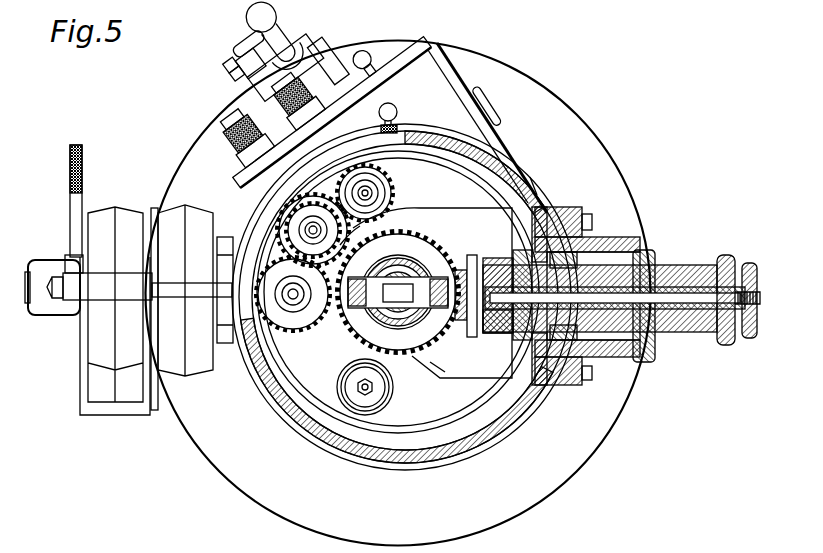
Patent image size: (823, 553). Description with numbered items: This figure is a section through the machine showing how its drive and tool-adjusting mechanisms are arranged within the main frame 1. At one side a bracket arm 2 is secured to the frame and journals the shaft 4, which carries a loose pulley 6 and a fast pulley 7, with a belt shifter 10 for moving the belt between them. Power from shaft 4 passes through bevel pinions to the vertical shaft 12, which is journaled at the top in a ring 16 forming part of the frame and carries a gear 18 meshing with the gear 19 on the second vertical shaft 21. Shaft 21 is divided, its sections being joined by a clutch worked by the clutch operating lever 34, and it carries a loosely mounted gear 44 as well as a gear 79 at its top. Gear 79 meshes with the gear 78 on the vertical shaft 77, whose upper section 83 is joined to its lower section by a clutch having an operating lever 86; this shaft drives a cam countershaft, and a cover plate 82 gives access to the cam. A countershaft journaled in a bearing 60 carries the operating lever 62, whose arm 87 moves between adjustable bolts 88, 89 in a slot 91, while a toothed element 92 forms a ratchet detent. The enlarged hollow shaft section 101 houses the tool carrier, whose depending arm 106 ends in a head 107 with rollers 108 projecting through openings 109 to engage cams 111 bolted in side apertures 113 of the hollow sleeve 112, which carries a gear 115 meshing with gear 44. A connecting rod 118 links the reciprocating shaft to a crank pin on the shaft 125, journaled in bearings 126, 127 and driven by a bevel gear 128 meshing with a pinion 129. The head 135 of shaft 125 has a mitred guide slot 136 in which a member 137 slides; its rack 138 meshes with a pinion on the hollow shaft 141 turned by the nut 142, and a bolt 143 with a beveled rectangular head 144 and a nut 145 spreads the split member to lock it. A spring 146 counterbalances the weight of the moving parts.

The main frame 1 is at (297, 536).
The bracket arm 2 is at (54, 300).
The shaft 4 is at (27, 300).
The loose pulley 6 is at (115, 212).
The fast pulley 7 is at (180, 206).
The belt shifter 10 is at (147, 286).
The vertical shaft 12 is at (293, 300).
The ring 16 is at (462, 293).
The gear 18 is at (306, 334).
The gear 19 is at (256, 224).
The second vertical shaft 21 is at (311, 220).
The clutch operating lever 34 is at (230, 136).
The gear 44 is at (266, 216).
The bearing 60 is at (360, 52).
The operating lever 62 is at (272, 12).
The vertical shaft 77 is at (378, 193).
The gear 78 is at (388, 186).
The gear 79 is at (258, 196).
The cover plate 82 is at (415, 42).
The upper section 83 is at (365, 190).
The operating lever 86 is at (286, 104).
The arm 87 is at (252, 99).
The bolt 88 is at (252, 90).
The bolt 89 is at (262, 79).
The slot 91 is at (256, 48).
The toothed element 92 is at (326, 54).
The hollow shaft section 101 is at (393, 234).
The depending arm 106 is at (411, 262).
The head 107 is at (404, 326).
The rollers 108 is at (447, 263).
The openings 109 is at (418, 243).
The cams 111 is at (440, 334).
The hollow sleeve 112 is at (427, 352).
The side apertures 113 is at (381, 275).
The gear 115 is at (452, 243).
The connecting rod 118 is at (450, 352).
The shaft 125 is at (646, 244).
The bearing 126 is at (578, 270).
The bearing 127 is at (669, 265).
The bevel gear 128 is at (590, 230).
The pinion 129 is at (564, 330).
The head 135 is at (500, 258).
The guide slot 136 is at (470, 342).
The member 137 is at (476, 264).
The rack 138 is at (540, 262).
The hollow shaft 141 is at (596, 335).
The nut 142 is at (730, 256).
The bolt 143 is at (672, 330).
The beveled rectangular head 144 is at (473, 328).
The nut 145 is at (752, 268).
The spring 146 is at (372, 389).